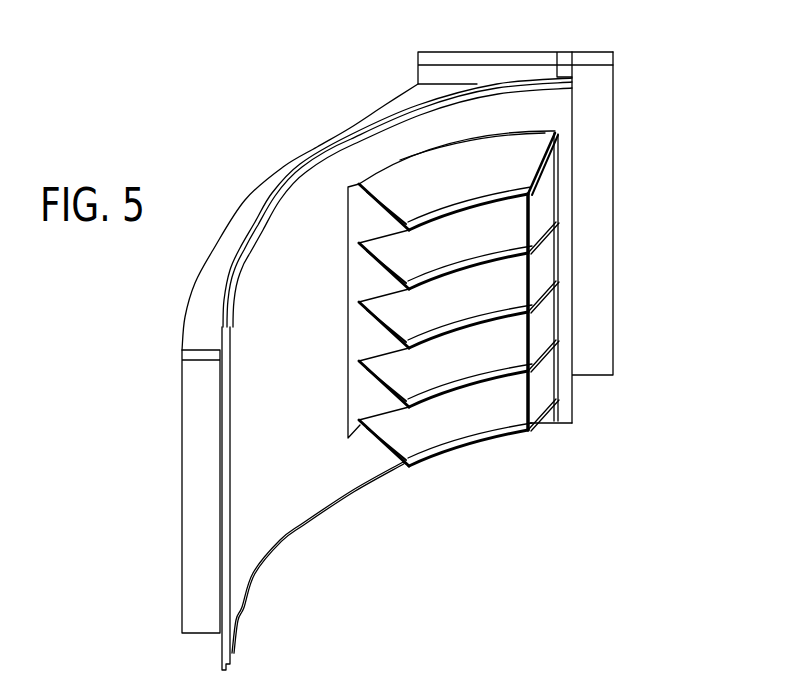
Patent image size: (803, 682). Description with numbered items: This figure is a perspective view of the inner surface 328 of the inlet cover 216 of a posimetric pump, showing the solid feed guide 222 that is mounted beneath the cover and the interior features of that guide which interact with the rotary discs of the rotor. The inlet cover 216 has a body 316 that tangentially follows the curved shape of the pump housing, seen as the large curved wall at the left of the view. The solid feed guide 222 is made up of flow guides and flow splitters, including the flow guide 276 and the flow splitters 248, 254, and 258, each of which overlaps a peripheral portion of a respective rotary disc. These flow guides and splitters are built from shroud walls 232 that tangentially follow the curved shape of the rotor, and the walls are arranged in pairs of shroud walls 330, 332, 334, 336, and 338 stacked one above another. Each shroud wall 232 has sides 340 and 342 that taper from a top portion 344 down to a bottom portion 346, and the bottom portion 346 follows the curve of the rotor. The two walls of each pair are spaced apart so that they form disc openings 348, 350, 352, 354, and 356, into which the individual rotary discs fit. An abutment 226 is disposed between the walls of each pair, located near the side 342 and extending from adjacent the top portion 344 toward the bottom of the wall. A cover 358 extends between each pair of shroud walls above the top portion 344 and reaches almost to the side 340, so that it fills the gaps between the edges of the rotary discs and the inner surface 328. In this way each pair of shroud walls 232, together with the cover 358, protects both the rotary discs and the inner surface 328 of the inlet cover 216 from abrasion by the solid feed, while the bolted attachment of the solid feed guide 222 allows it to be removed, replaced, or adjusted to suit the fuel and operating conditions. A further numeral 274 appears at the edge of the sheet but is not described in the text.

The inlet cover 216 is at (303, 90).
The body 316 is at (222, 236).
The inner surface 328 is at (375, 221).
The flow splitter 258 is at (375, 221).
The side 342 is at (556, 158).
The solid feed guide 222 is at (567, 251).
The abutment 226 is at (556, 170).
The side 340 is at (383, 196).
The disc opening 356 is at (526, 191).
The shroud wall 232 is at (433, 176).
The top portion 344 is at (472, 150).
The bottom portion 346 is at (497, 178).
The flow splitter 254 is at (373, 282).
The disc opening 354 is at (529, 254).
The pair of shroud walls 338 is at (448, 203).
The flow splitter 248 is at (370, 341).
The disc opening 352 is at (531, 311).
The pair of shroud walls 336 is at (440, 262).
The cover 358 is at (369, 356).
The disc opening 350 is at (529, 371).
The pair of shroud walls 334 is at (433, 322).
The flow guide 276 is at (373, 401).
The disc opening 348 is at (526, 429).
The pair of shroud walls 332 is at (425, 382).
The pair of shroud walls 330 is at (426, 457).
The lower duct wall 274 is at (627, 677).